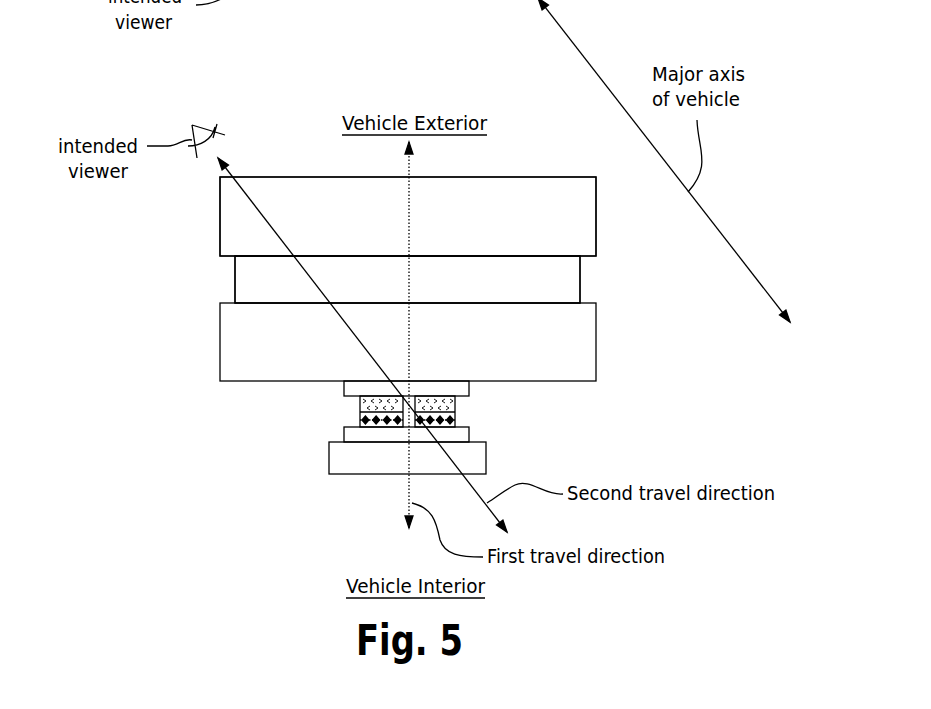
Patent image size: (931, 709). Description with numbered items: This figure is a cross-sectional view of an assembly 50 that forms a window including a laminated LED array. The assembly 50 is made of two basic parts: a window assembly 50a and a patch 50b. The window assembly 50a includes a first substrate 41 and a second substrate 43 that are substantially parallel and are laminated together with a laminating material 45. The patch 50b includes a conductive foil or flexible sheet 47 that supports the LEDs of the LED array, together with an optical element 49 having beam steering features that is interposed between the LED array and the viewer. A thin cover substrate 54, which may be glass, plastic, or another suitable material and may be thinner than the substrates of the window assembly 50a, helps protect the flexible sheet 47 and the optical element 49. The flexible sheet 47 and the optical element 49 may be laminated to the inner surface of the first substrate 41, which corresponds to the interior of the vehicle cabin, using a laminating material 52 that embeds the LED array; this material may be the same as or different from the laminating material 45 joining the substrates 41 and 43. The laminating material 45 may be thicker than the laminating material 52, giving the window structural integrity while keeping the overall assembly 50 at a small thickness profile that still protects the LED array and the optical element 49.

The assembly 50 is at (118, 364).
The window assembly 50a is at (205, 178).
The patch 50b is at (205, 381).
The second substrate 43 is at (596, 216).
The laminating material 45 is at (580, 278).
The first substrate 41 is at (596, 341).
The laminating material 52 is at (469, 386).
The optical element 49 is at (360, 404).
The conductive foil or flexible sheet 47 is at (360, 420).
The thin cover substrate 54 is at (486, 460).